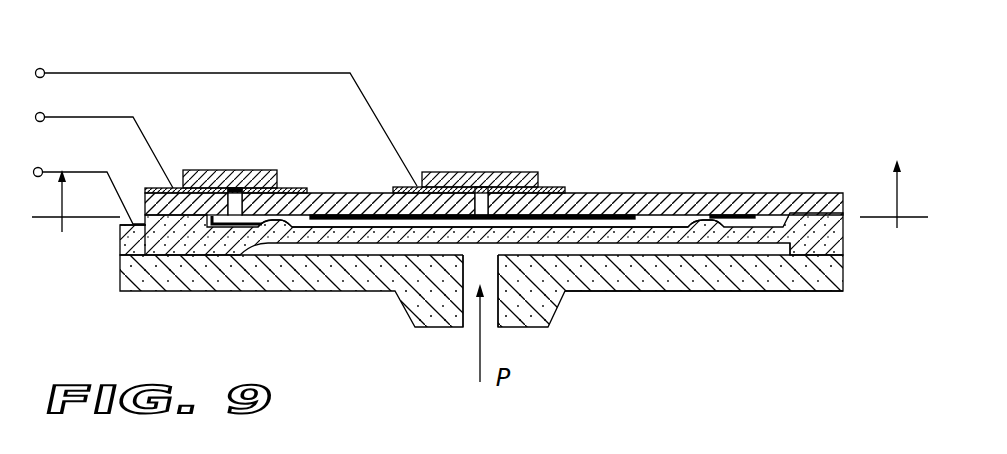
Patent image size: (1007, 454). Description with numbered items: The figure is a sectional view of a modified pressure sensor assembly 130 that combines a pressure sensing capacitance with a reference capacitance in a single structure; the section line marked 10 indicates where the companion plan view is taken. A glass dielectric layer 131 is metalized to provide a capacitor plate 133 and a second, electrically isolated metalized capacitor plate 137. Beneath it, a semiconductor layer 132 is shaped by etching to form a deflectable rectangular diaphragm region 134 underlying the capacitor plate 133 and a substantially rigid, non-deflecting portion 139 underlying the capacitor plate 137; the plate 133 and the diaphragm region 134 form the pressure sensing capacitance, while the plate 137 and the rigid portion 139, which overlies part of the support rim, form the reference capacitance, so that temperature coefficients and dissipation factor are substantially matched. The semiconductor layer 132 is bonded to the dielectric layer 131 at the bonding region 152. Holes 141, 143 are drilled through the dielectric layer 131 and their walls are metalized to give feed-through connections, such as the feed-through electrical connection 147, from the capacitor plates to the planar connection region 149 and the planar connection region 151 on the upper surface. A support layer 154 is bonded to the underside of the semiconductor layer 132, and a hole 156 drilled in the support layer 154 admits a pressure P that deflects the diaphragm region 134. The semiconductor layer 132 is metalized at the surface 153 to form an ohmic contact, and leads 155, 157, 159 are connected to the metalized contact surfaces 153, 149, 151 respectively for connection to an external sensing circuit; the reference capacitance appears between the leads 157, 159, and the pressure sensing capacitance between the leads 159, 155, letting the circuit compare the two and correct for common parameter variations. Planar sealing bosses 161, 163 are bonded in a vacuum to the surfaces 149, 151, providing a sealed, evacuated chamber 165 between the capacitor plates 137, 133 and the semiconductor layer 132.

The section line 10- 10 is at (38, 238).
The pressure sensor assembly 130 is at (552, 148).
The dielectric layer 131 is at (836, 192).
The semiconductor layer 132 is at (827, 240).
The capacitor plate 133 is at (640, 212).
The deflecting diaphragm region 134 is at (605, 228).
The second metalized capacitor plate 137 is at (266, 180).
The non-deflecting portion 139 is at (262, 225).
The hole 141 is at (238, 188).
The hole 143 is at (487, 187).
The feed-through electrical connection 147 is at (455, 193).
The planar connection region 149 is at (172, 190).
The planar connection region 151 is at (560, 185).
The bonding region 152 is at (180, 215).
The metalized surface 153 is at (118, 245).
The support layer 154 is at (818, 292).
The lead 155 is at (117, 73).
The hole 156 is at (477, 268).
The lead 157 is at (100, 118).
The lead 159 is at (87, 172).
The planar sealing boss 161 is at (263, 186).
The planar sealing boss 163 is at (522, 183).
The sealed evacuated chamber 165 is at (307, 220).